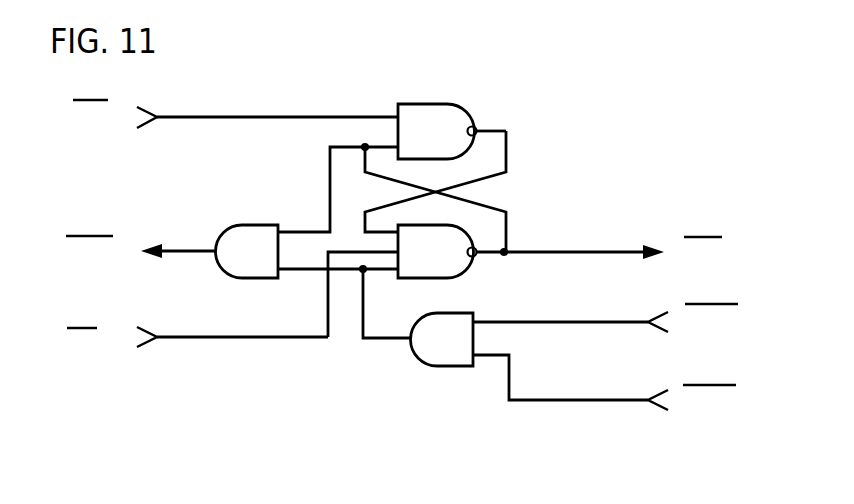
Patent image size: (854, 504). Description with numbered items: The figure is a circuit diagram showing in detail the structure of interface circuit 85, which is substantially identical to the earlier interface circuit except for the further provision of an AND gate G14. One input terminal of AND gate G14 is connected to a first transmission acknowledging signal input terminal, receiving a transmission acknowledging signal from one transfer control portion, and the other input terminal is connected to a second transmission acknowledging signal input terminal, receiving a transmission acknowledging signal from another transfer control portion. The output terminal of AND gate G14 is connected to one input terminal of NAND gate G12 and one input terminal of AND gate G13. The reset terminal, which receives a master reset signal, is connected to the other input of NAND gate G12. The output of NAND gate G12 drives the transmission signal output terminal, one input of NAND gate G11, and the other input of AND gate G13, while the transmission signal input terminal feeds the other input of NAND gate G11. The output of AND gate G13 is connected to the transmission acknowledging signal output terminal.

The interface circuit 85 is at (631, 164).
The NAND gate G11 is at (452, 103).
The NAND gate G12 is at (458, 273).
The AND gate G13 is at (250, 224).
The AND gate G14 is at (443, 368).